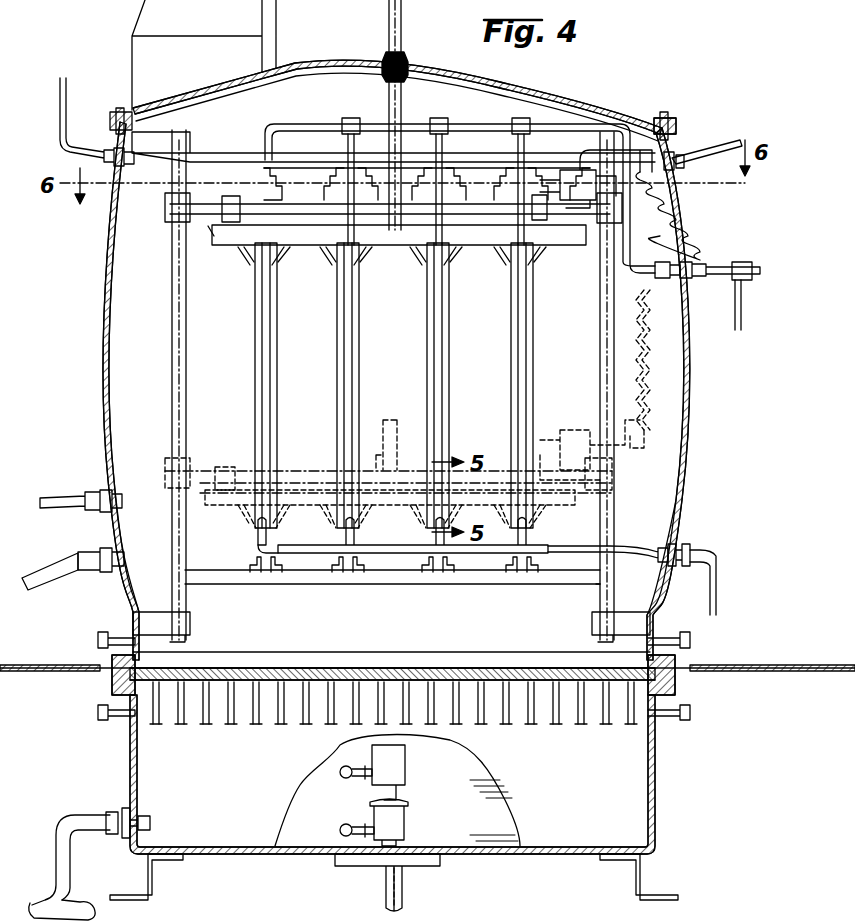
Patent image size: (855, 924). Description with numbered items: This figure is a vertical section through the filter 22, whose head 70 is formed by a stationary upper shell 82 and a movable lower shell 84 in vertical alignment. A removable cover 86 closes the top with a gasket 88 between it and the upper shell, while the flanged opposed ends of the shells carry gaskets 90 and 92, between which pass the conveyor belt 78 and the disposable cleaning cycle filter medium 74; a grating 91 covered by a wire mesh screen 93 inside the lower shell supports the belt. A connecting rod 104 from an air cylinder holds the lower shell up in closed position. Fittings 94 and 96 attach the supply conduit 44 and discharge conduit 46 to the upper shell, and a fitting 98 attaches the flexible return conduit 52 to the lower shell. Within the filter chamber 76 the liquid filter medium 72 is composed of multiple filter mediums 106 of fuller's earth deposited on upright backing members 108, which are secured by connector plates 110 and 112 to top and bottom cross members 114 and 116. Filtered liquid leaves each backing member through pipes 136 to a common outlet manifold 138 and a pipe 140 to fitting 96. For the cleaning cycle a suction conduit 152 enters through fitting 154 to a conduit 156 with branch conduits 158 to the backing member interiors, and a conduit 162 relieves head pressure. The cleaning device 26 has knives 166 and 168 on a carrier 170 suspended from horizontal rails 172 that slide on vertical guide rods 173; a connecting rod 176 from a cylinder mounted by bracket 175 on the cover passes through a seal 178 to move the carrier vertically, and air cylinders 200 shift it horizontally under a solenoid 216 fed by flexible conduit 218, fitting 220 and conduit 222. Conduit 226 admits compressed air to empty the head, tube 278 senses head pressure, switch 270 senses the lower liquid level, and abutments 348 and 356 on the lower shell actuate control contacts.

The filter 22 is at (678, 76).
The cleaning device 26 is at (586, 256).
The supply conduit 44 is at (36, 584).
The discharge conduit 46 is at (708, 560).
The return conduit 52 is at (56, 870).
The head 70 is at (688, 392).
The liquid filter medium 72 is at (236, 384).
The cleaning cycle filter medium 74 is at (318, 668).
The filter chamber 76 is at (402, 333).
The conveyor belt 78 is at (24, 672).
The upper shell 82 is at (686, 440).
The lower shell 84 is at (656, 776).
The cover 86 is at (560, 84).
The gasket 88 is at (680, 118).
The gasket 90 is at (110, 668).
The grating 91 is at (528, 728).
The gasket 92 is at (112, 675).
The wire mesh screen 93 is at (393, 713).
The fitting 94 is at (106, 548).
The fitting 96 is at (680, 548).
The fitting 98 is at (114, 806).
The connecting rod 104 is at (404, 888).
The filter mediums 106 is at (541, 324).
The backing members 108 is at (270, 388).
The connector plates 110 is at (330, 186).
The connector plates 112 is at (266, 574).
The top cross member 114 is at (240, 132).
The bottom cross member 116 is at (550, 584).
The pipes 136 is at (258, 540).
The common outlet manifold 138 is at (394, 584).
The pipe 140 is at (628, 546).
The conduit 152 is at (770, 246).
The fitting 154 is at (680, 264).
The conduit 156 is at (458, 124).
The branch conduits 158 is at (346, 134).
The conduit 162 is at (735, 310).
The knives 166 is at (248, 270).
The knives 168 is at (288, 266).
The carrier 170 is at (246, 238).
The rails 172 is at (210, 222).
The guide rods 173 is at (172, 370).
The bracket 175 is at (276, 34).
The connecting rod 176 is at (404, 92).
The seal 178 is at (406, 50).
The air cylinders 200 is at (568, 170).
The solenoid 216 is at (636, 440).
The conduit 218 is at (656, 212).
The fitting 220 is at (674, 168).
The conduit 222 is at (702, 150).
The conduit 226 is at (56, 128).
The lower liquid level responsive switch 270 is at (414, 803).
The tube 278 is at (52, 495).
The abutment 348 is at (152, 884).
The abutment 356 is at (648, 870).